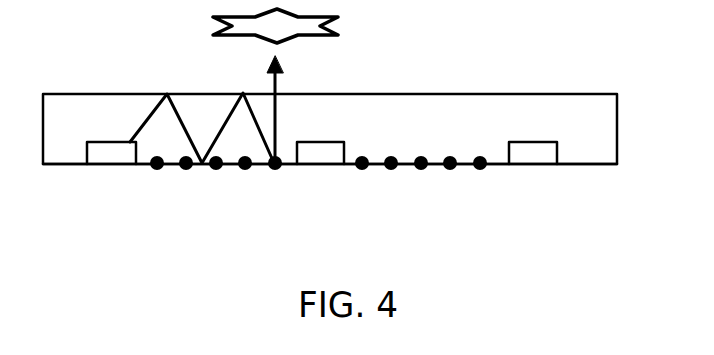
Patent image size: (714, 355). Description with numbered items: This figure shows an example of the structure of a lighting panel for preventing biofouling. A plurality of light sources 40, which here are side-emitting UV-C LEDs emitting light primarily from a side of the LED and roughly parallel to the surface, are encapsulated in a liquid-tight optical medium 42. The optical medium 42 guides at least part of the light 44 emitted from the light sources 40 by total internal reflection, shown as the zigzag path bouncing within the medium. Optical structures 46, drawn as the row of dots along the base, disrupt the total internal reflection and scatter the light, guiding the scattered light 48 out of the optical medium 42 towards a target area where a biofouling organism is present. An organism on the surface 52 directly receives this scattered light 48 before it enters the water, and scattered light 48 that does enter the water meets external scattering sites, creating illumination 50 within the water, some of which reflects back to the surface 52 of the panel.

The light sources 40 is at (117, 167).
The optical medium 42 is at (62, 145).
The light 44 is at (222, 120).
The optical structures 46 is at (187, 167).
The scattered light 48 is at (277, 80).
The illumination 50 is at (329, 16).
The surface 52 is at (517, 93).